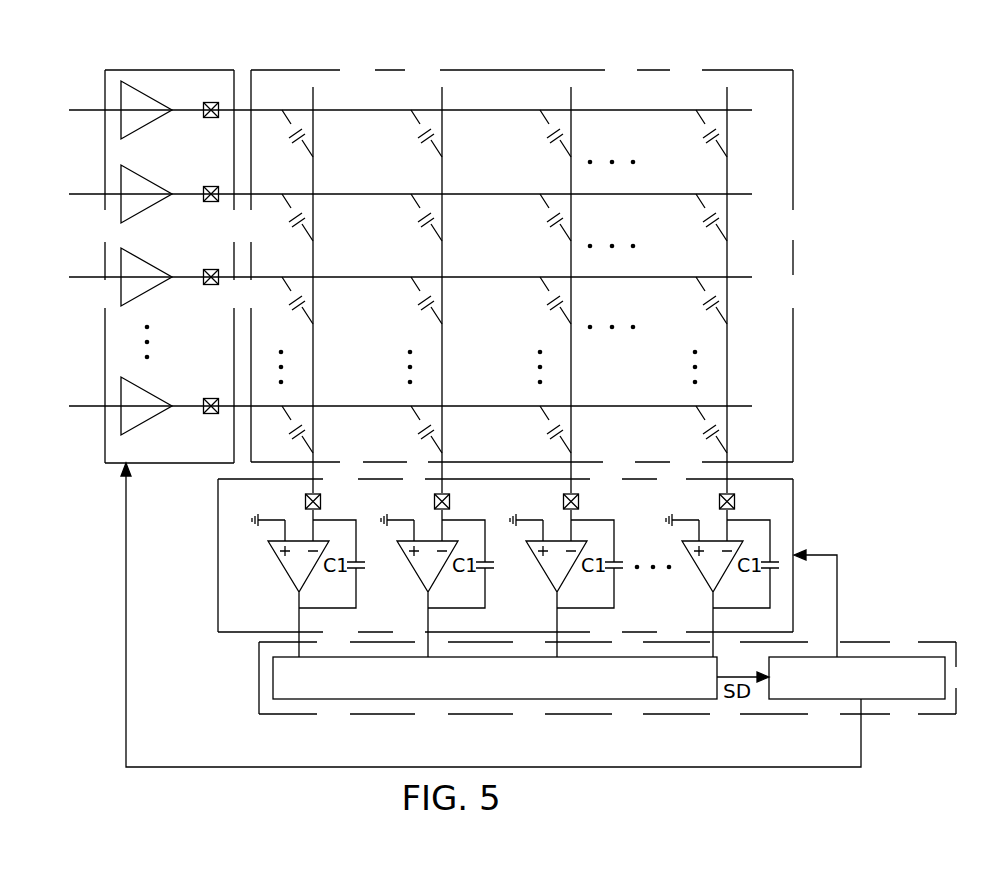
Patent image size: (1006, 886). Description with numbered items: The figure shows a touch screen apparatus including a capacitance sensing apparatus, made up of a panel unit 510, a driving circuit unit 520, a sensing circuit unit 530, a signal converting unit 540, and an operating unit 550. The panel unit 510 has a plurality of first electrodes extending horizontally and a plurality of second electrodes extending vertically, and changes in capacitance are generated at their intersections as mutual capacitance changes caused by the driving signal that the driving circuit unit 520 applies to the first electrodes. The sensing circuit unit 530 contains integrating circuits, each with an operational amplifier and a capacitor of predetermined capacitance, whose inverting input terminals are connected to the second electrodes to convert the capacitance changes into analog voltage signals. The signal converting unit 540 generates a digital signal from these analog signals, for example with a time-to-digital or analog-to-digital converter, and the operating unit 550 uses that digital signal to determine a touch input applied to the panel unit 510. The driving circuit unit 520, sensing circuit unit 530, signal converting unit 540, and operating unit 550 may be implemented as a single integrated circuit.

The panel unit 510 is at (540, 70).
The driving circuit unit 520 is at (170, 70).
The sensing circuit unit 530 is at (218, 557).
The signal converting unit 540 is at (507, 701).
The operating unit 550 is at (838, 701).